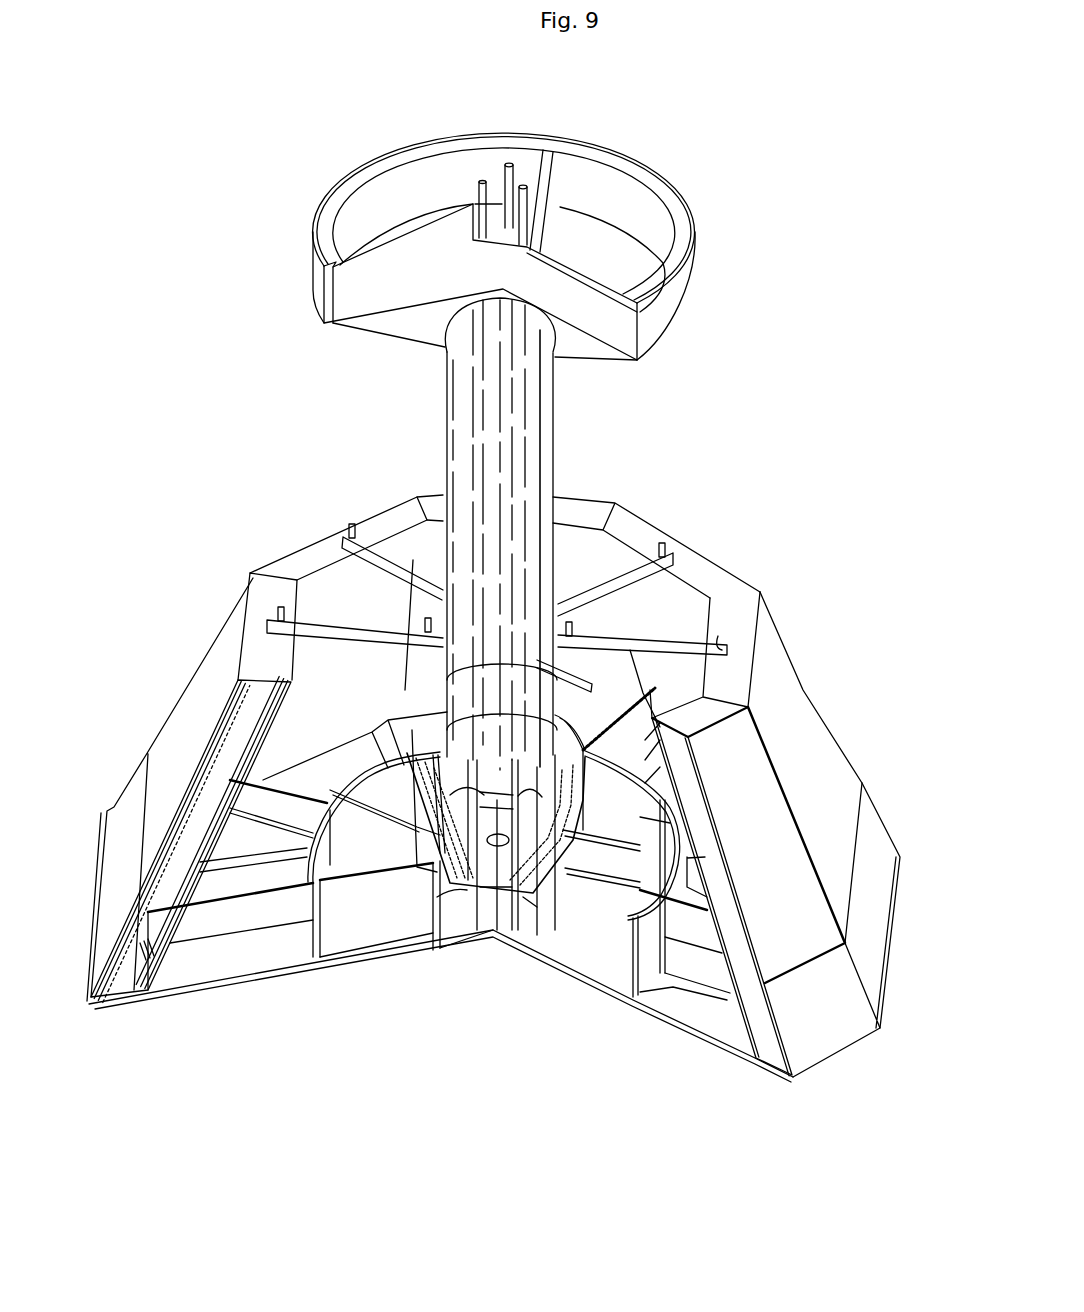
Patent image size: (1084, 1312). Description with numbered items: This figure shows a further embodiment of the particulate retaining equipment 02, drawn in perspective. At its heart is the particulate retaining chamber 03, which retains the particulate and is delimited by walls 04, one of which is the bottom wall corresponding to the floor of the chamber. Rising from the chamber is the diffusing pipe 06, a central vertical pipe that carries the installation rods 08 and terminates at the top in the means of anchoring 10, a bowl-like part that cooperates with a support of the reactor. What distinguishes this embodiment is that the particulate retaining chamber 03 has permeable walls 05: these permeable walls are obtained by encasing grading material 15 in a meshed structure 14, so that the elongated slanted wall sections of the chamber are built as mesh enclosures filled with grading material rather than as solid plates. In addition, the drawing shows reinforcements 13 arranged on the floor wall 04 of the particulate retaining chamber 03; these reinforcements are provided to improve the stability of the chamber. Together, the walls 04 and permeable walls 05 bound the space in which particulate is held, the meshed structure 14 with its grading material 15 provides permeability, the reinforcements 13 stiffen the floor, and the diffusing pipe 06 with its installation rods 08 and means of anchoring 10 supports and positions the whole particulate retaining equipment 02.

The particulate retaining equipment 02 is at (272, 460).
The particulate retaining chamber 03 is at (545, 1078).
The walls 04 is at (855, 758).
The permeable walls 05 is at (200, 826).
The diffusing pipe 06 is at (572, 440).
The installation rods 08 is at (533, 208).
The means of anchoring 10 is at (310, 218).
The reinforcements 13 is at (264, 912).
The meshed structure 14 is at (200, 700).
The grading material 15 is at (148, 992).